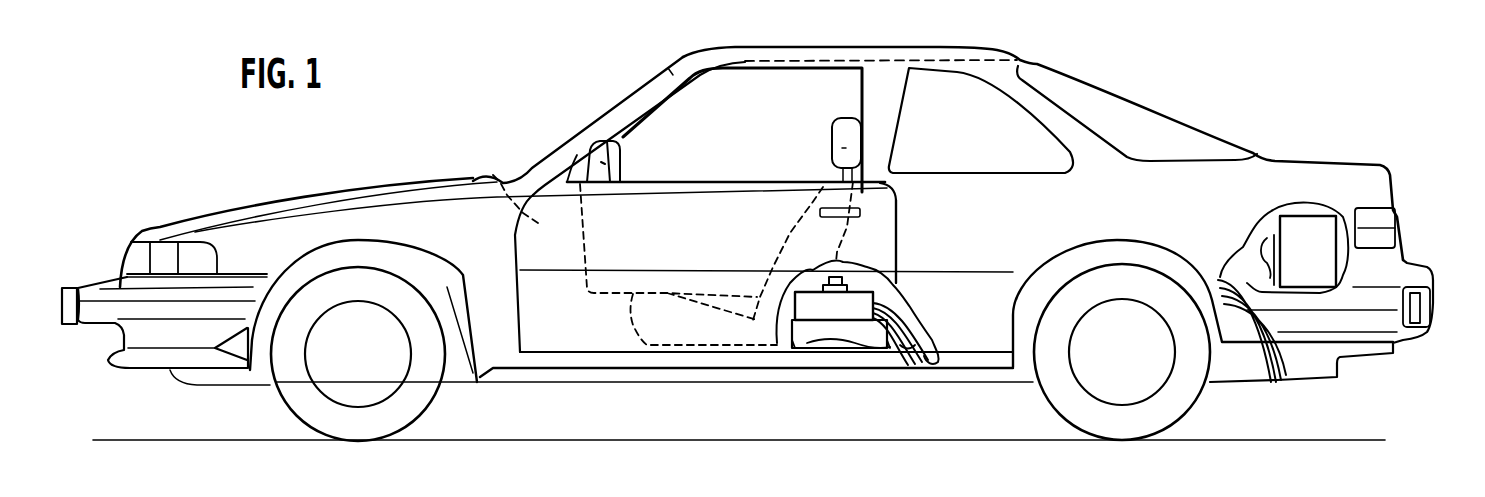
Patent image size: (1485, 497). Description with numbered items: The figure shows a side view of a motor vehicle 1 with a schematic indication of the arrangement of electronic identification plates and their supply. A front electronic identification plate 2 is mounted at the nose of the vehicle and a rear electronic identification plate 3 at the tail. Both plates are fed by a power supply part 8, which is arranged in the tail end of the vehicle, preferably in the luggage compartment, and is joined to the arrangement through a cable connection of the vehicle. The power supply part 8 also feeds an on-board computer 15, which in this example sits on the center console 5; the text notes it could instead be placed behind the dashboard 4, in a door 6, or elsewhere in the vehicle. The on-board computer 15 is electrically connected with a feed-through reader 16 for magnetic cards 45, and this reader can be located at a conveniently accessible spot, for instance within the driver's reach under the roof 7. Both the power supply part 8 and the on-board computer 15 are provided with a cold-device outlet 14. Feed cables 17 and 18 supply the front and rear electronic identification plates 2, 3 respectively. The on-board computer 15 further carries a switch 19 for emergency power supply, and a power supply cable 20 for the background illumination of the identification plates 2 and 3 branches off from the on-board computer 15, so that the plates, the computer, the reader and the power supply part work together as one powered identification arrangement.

The motor vehicle 1 is at (548, 100).
The front electronic identification plate 2 is at (70, 286).
The rear electronic identification plate 3 is at (1428, 312).
The dashboard 4 is at (493, 175).
The center console 5 is at (833, 332).
The door 6 is at (674, 228).
The roof 7 is at (698, 62).
The power supply part 8 is at (1305, 230).
The cold-device outlet 14 is at (927, 320).
The on-board computer 15 is at (790, 313).
The feed-through reader 16 is at (815, 288).
The feed cable for the front electronic identification plate 17 is at (795, 340).
The feed cable for the rear electronic identification plate 18 is at (908, 347).
The switch for emergency power supply 19 is at (1265, 260).
The power supply cable 20 is at (913, 285).
The magnetic card 45 is at (897, 236).